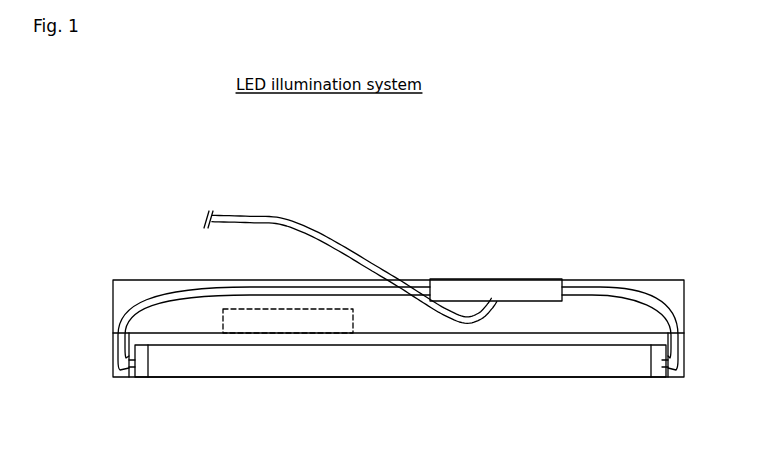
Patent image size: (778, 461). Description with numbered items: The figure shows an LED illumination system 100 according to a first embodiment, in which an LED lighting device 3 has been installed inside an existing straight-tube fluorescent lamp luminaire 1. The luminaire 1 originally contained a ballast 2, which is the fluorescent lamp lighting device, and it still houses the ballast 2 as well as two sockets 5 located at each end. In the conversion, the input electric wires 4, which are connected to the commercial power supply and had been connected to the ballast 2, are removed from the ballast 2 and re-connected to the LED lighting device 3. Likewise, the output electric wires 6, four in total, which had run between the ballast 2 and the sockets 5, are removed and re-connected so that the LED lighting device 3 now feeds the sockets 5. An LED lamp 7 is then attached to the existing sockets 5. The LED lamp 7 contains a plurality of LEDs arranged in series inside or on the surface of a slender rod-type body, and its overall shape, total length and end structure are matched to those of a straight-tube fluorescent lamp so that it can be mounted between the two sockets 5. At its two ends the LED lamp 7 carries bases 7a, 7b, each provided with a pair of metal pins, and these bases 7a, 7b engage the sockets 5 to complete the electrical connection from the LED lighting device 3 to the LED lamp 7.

The LED illumination system 100 is at (516, 158).
The straight-tube fluorescent lamp luminaire 1 is at (640, 280).
The ballast 2 is at (262, 309).
The LED lighting device 3 is at (492, 278).
The input electric wires 4 is at (321, 233).
The sockets 5 is at (120, 378).
The output electric wires 6 is at (131, 302).
The LED lamp 7 is at (389, 381).
The base 7a is at (142, 379).
The base 7b is at (659, 378).